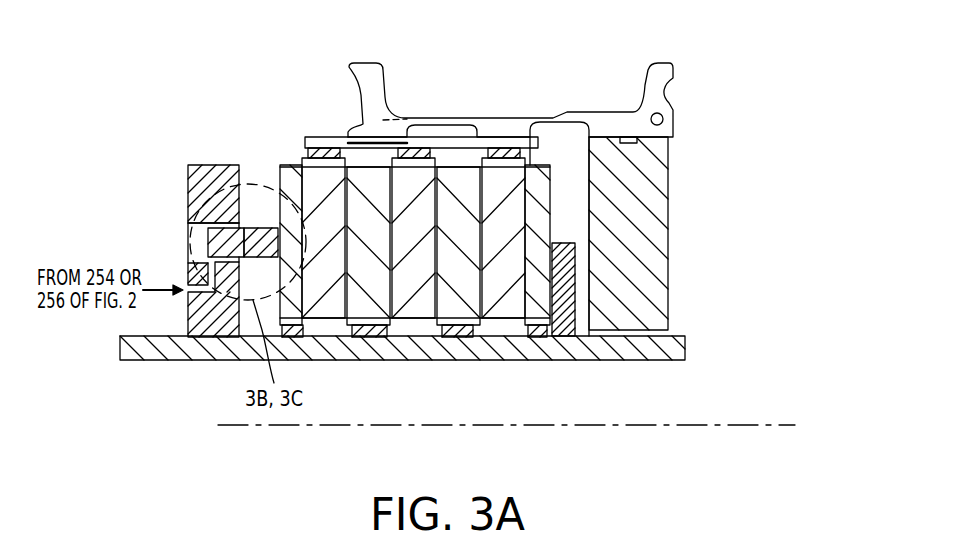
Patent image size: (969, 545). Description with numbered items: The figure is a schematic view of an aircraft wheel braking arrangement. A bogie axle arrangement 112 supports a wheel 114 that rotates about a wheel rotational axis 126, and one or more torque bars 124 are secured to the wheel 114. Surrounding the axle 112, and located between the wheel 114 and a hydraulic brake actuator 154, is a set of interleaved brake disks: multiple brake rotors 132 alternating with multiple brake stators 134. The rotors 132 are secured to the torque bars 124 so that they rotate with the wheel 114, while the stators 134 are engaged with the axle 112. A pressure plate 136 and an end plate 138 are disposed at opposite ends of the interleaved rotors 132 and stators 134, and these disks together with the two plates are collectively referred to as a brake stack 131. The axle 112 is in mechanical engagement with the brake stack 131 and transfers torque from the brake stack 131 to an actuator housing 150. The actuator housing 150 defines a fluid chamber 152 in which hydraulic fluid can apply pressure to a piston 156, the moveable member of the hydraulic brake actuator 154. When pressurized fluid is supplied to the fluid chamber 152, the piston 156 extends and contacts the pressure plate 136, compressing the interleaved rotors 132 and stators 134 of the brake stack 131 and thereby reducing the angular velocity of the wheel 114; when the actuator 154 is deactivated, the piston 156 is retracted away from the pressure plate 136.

The bogie axle arrangement 112 is at (382, 360).
The wheel 114 is at (510, 120).
The torque bar 124 is at (330, 137).
The wheel rotational axis 126 is at (453, 425).
The brake stack 131 is at (283, 130).
The brake rotor 132 is at (340, 230).
The brake stator 134 is at (385, 233).
The pressure plate 136 is at (287, 172).
The end plate 138 is at (538, 170).
The actuator housing 150 is at (205, 163).
The fluid chamber 152 is at (192, 237).
The hydraulic brake actuator 154 is at (205, 220).
The piston 156 is at (260, 233).